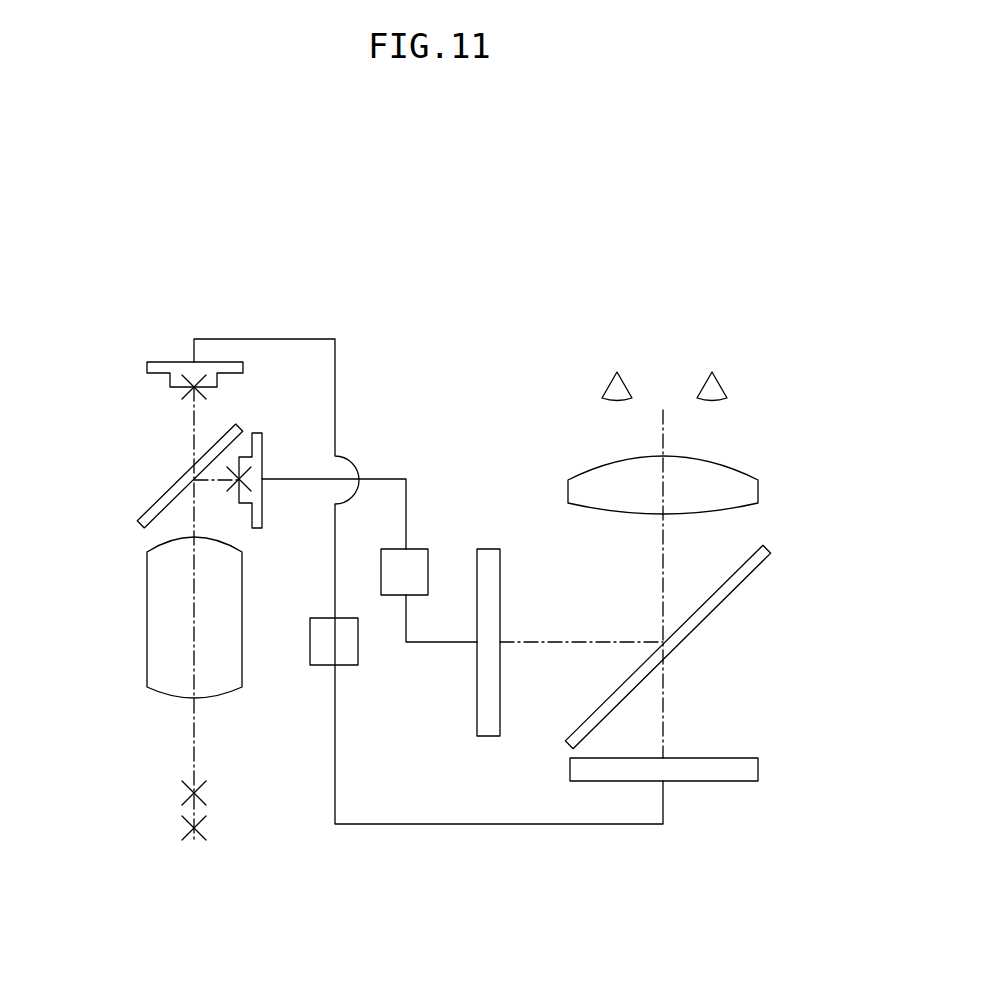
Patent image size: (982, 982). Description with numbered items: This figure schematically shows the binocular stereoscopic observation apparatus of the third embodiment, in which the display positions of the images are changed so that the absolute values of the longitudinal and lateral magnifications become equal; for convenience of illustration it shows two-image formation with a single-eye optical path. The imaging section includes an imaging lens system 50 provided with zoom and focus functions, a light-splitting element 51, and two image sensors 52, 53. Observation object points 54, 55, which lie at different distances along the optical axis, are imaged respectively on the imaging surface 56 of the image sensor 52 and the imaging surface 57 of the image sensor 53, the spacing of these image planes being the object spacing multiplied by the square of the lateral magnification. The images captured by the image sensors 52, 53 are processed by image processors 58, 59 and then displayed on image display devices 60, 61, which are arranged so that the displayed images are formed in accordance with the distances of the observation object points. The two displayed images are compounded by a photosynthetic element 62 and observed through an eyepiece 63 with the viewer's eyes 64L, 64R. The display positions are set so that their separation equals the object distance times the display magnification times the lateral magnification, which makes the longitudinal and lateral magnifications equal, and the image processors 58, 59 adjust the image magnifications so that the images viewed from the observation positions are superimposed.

The imaging lens system 50 is at (147, 619).
The light-splitting element 51 is at (140, 512).
The image sensor 52 is at (261, 433).
The image sensor 53 is at (170, 362).
The observation object point 54 is at (190, 830).
The observation object point 55 is at (190, 795).
The imaging surface 56 is at (235, 483).
The imaging surface 57 is at (192, 388).
The image processor 58 is at (414, 547).
The image processor 59 is at (310, 640).
The image display device 60 is at (488, 549).
The image display device 61 is at (758, 768).
The photosynthetic element 62 is at (767, 549).
The eyepiece 63 is at (758, 492).
The viewer's left eye 64L is at (612, 385).
The viewer's right eye 64R is at (717, 388).